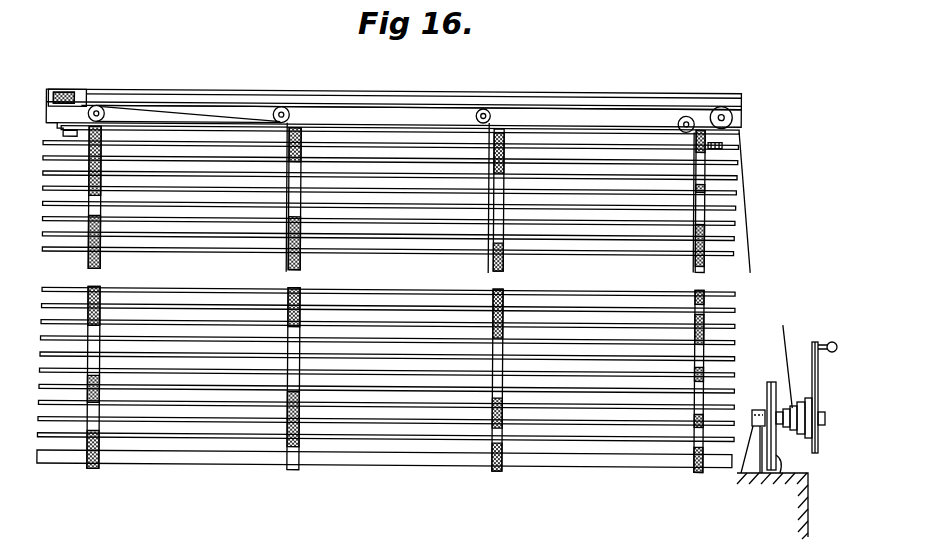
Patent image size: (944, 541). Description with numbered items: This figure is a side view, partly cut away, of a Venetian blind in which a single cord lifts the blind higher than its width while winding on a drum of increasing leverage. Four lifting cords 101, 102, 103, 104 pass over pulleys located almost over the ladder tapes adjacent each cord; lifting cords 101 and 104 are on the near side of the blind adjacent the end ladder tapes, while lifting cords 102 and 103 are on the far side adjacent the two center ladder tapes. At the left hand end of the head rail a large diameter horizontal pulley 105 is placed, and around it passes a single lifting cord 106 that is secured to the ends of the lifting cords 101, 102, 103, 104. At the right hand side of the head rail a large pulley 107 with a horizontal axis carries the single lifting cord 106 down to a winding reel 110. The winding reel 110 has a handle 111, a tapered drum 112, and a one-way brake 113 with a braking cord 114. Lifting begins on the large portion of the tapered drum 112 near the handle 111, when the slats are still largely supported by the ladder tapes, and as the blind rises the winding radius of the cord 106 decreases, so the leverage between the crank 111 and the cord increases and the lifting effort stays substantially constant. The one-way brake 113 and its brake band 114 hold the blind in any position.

The lifting cord 101 is at (88, 289).
The lifting cord 102 is at (290, 289).
The lifting cord 103 is at (493, 289).
The lifting cord 104 is at (694, 290).
The horizontal pulley 105 is at (68, 89).
The single lifting cord 106 is at (192, 92).
The large pulley 107 is at (730, 111).
The winding reel 110 is at (810, 392).
The handle 111 is at (834, 330).
The tapered drum 112 is at (800, 448).
The one-way brake 113 is at (777, 362).
The braking cord 114 is at (776, 482).